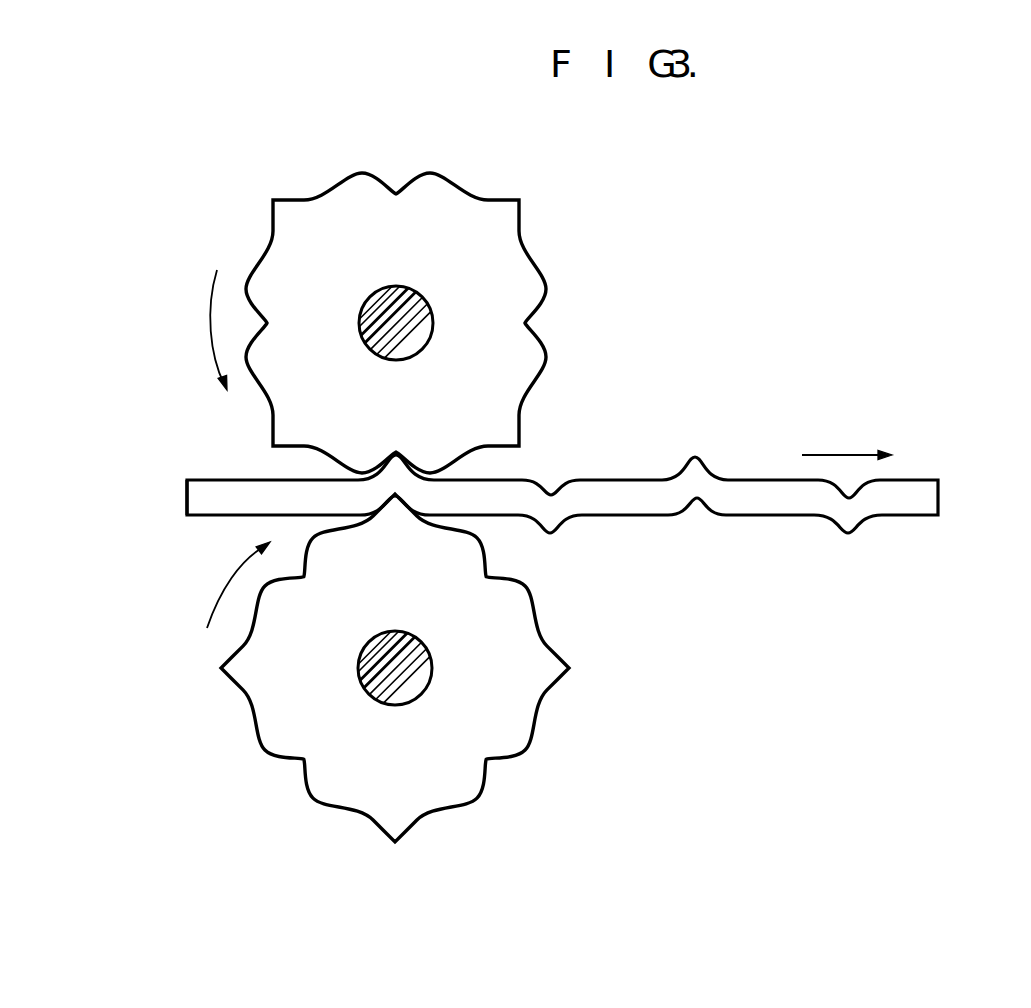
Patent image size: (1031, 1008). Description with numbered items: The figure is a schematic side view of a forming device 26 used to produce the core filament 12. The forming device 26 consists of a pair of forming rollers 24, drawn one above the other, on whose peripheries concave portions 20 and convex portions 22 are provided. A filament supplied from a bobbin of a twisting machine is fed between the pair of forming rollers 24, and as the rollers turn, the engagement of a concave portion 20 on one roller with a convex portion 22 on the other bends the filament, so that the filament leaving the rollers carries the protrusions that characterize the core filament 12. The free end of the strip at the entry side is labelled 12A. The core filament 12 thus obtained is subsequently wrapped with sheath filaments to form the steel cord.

The core filament 12 is at (944, 495).
The leading end of sheet 12A is at (220, 479).
The concave portion 20 is at (398, 194).
The convex portion 22 is at (518, 198).
The forming roller 24 is at (268, 243).
The forming device 26 is at (461, 848).